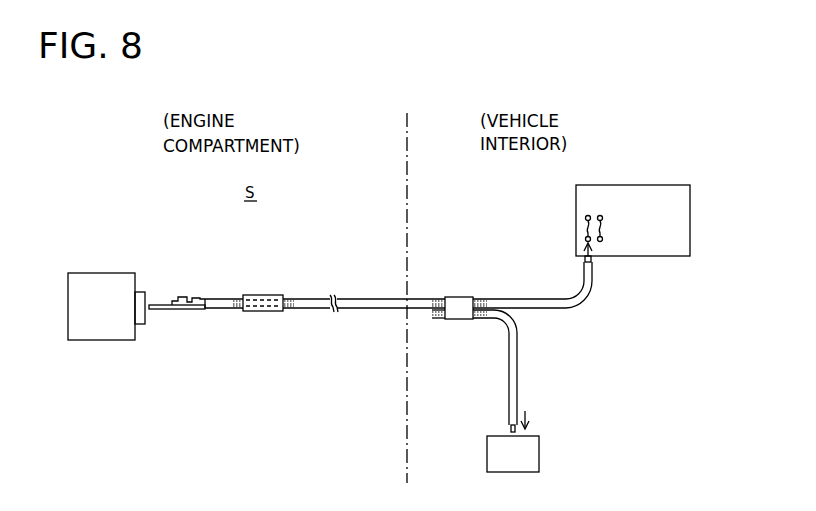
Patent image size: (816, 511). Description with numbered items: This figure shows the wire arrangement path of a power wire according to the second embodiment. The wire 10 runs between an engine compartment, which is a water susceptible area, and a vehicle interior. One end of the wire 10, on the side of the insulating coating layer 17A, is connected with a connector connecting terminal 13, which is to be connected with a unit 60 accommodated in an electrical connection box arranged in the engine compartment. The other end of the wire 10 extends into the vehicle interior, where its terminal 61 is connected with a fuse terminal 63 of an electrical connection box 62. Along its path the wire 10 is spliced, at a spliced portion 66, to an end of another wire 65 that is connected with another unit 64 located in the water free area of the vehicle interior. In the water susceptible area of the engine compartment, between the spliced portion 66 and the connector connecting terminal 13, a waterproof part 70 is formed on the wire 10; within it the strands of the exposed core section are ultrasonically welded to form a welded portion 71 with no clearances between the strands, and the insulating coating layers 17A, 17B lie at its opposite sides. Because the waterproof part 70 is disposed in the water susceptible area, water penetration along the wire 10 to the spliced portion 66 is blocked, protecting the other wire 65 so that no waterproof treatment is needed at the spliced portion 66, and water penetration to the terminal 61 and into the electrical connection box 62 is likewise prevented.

The wire 10 is at (325, 304).
The connector connecting terminal 13 is at (171, 312).
The insulating coating layer 17A is at (220, 310).
The insulating coating layer 17B is at (309, 310).
The unit 60 is at (98, 340).
The terminal 61 is at (596, 263).
The electrical connection box 62 is at (637, 185).
The fuse terminal 63 is at (584, 237).
The unit 64 is at (540, 452).
The wire 65 is at (518, 362).
The spliced portion 66 is at (458, 296).
The waterproof part 70 is at (271, 313).
The welded portion 71 is at (266, 293).